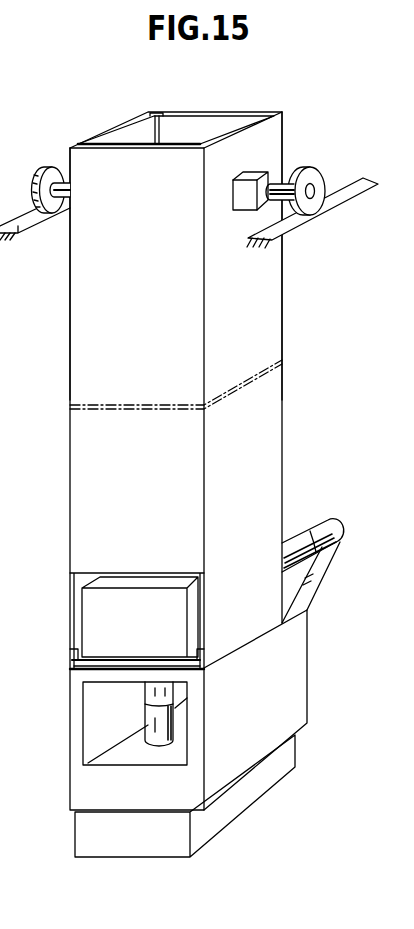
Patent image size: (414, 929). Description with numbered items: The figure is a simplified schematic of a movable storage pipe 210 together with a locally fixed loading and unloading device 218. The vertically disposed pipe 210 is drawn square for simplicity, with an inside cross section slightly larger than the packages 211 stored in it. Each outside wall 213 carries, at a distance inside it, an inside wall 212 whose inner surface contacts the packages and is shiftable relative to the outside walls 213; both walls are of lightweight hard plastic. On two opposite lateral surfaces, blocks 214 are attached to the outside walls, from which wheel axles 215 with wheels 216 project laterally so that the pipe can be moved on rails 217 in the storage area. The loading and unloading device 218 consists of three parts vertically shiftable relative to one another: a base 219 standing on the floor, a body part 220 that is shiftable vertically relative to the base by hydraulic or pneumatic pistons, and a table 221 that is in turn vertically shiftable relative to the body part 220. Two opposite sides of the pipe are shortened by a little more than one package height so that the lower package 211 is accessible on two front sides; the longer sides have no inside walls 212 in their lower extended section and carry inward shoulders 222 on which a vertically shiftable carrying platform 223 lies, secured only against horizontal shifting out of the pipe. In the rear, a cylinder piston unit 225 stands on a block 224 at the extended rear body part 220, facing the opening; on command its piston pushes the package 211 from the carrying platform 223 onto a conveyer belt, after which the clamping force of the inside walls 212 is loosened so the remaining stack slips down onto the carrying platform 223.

The storage pipe 210 is at (297, 303).
The package 211 is at (138, 633).
The inside wall 212 is at (238, 110).
The outside wall 213 is at (103, 160).
The block 214 is at (266, 174).
The wheel axle 215 is at (283, 203).
The wheel 216 is at (317, 182).
The rail 217 is at (345, 197).
The loading and unloading device 218 is at (317, 672).
The base 219 is at (243, 802).
The body part 220 is at (80, 791).
The table 221 is at (102, 677).
The inward shoulder 222 is at (78, 653).
The carrying platform 223 is at (172, 657).
The block 224 is at (312, 583).
The cylinder piston unit 225 is at (327, 520).